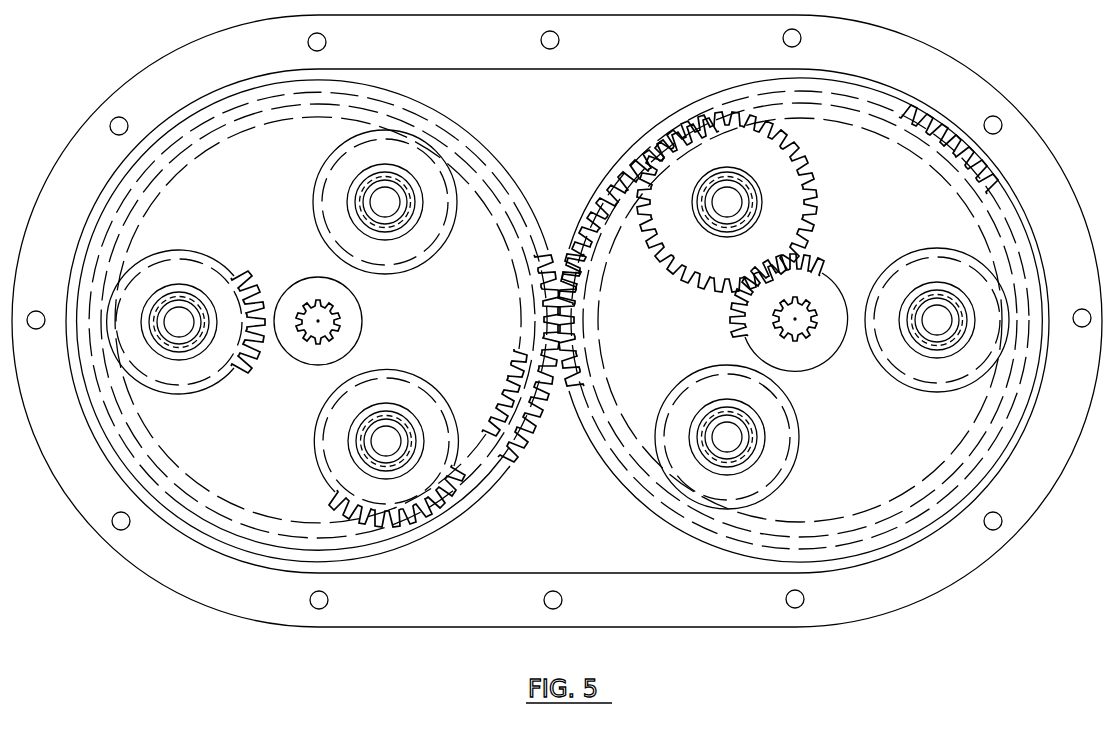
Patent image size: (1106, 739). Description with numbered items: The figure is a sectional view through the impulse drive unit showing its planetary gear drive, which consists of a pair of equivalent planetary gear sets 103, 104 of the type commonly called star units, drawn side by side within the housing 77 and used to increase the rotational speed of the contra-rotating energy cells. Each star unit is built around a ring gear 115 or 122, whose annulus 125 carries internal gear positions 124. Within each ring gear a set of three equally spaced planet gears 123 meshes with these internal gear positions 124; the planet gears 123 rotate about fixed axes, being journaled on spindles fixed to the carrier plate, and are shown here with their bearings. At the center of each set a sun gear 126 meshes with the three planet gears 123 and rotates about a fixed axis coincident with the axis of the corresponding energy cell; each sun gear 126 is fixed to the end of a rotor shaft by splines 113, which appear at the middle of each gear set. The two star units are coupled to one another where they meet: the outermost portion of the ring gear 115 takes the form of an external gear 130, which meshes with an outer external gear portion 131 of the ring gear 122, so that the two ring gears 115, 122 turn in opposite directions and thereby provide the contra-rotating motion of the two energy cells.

The housing cover plate 77 is at (222, 609).
The planetary gear set 103 is at (400, 553).
The planetary gear set 104 is at (735, 574).
The splines 113 is at (341, 322).
The ring gear 115 is at (452, 515).
The ring gear 122 is at (655, 522).
The planet gears 123 is at (187, 250).
The internal gear positions 124 is at (514, 380).
The annulus 125 is at (462, 126).
The sun gear 126 is at (288, 380).
The external gear 130 is at (512, 467).
The outer external gear portion 131 is at (988, 119).